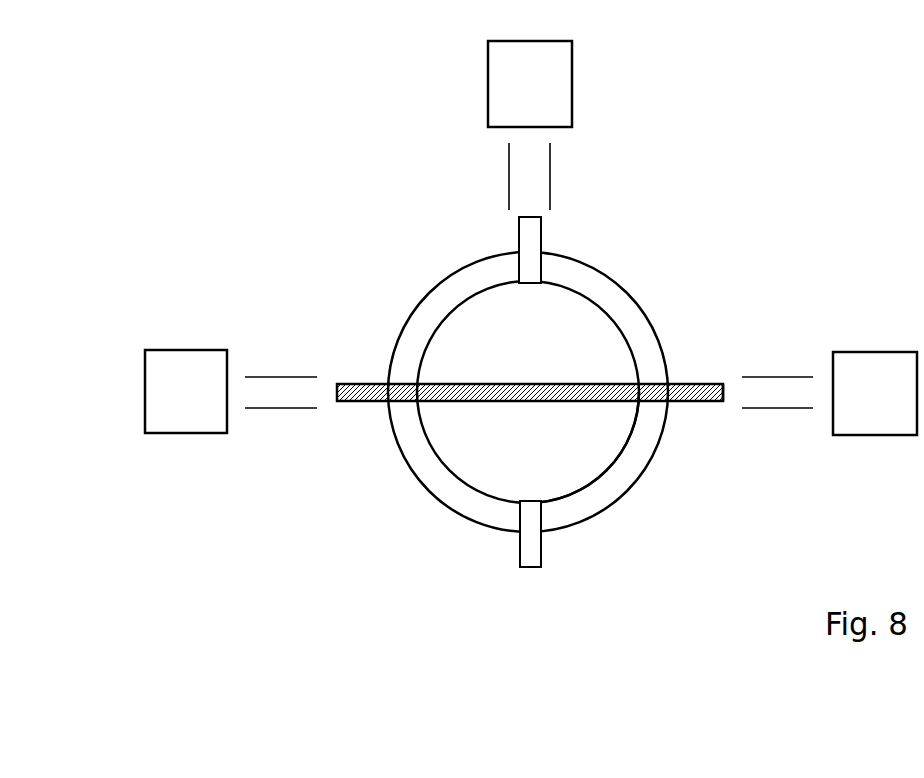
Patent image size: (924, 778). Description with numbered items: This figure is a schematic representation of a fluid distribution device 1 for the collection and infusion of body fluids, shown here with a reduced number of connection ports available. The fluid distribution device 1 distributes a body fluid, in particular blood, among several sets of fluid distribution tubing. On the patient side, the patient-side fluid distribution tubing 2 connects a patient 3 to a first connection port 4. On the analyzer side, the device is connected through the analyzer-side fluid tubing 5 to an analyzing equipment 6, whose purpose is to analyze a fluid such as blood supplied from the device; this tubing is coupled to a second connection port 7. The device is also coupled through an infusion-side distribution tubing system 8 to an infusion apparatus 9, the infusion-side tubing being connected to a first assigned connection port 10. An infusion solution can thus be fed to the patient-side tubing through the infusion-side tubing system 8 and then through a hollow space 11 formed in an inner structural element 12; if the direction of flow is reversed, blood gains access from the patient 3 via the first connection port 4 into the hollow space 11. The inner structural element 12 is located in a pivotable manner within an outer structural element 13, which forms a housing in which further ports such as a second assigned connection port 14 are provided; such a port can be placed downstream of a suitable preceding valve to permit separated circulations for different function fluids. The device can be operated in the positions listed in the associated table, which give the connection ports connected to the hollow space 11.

The fluid distribution device 1 is at (258, 251).
The patient-side fluid distribution tubing 2 is at (287, 408).
The patient 3 is at (167, 373).
The first connection port 4 is at (357, 402).
The analyzer-side fluid tubing 5 is at (545, 192).
The analyzing equipment 6 is at (555, 97).
The second connection port 7 is at (543, 247).
The infusion-side distribution tubing system 8 is at (797, 377).
The infusion apparatus 9 is at (893, 365).
The first assigned connection port 10 is at (693, 402).
The hollow space 11 is at (458, 402).
The inner structural element 12 is at (597, 437).
The outer structural element 13 is at (628, 312).
The second assigned connection port 14 is at (520, 547).